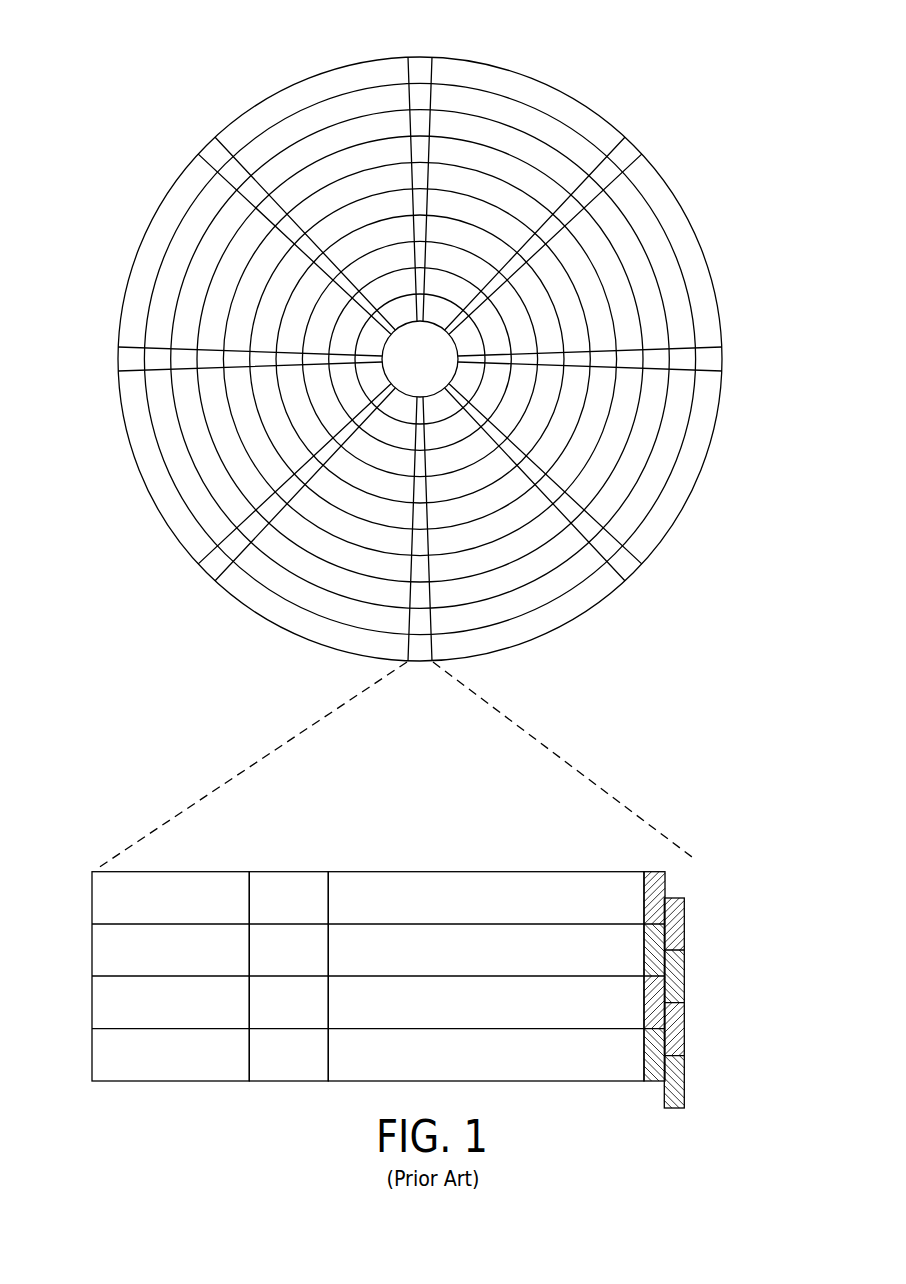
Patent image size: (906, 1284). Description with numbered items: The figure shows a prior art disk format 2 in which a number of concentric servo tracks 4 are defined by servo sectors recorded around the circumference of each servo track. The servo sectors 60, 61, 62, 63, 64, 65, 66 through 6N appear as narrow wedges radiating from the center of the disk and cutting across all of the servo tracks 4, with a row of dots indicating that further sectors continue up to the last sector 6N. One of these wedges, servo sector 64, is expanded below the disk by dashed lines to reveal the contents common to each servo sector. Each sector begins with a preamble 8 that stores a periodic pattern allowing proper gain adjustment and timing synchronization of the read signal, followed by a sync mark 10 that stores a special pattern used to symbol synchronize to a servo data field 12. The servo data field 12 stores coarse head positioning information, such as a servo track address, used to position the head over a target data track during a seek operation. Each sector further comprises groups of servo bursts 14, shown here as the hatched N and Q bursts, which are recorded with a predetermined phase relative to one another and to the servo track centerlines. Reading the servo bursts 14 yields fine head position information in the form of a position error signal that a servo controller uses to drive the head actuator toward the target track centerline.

The disk format 2 is at (200, 61).
The servo tracks 4 is at (523, 117).
The servo sector 60 is at (421, 68).
The servo sector 61 is at (627, 153).
The servo sector 62 is at (716, 360).
The servo sector 63 is at (631, 571).
The servo sector 64 is at (287, 734).
The servo sector 65 is at (210, 571).
The servo sector 66 is at (122, 358).
The servo sector 6N is at (213, 150).
The preamble 8 is at (178, 871).
The sync mark 10 is at (292, 871).
The servo data field 12 is at (476, 871).
The servo bursts 14 is at (679, 871).